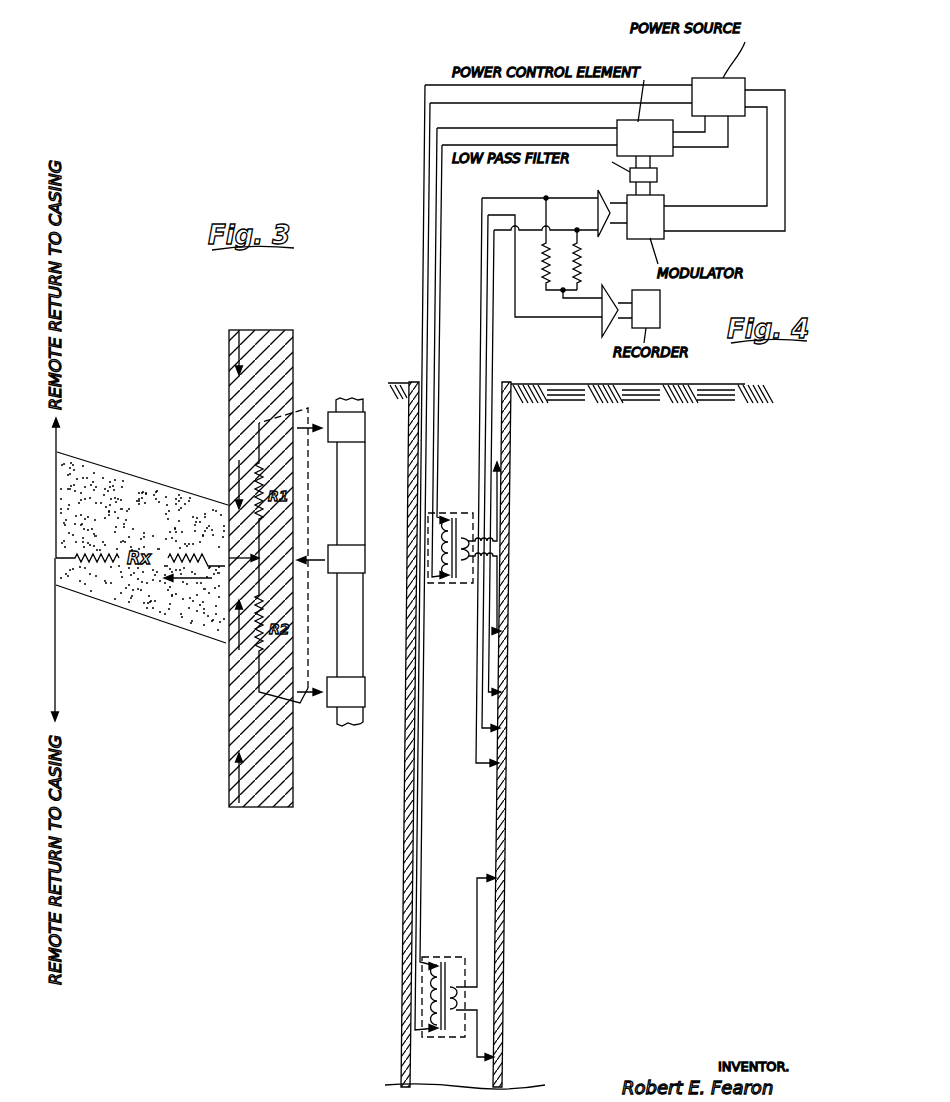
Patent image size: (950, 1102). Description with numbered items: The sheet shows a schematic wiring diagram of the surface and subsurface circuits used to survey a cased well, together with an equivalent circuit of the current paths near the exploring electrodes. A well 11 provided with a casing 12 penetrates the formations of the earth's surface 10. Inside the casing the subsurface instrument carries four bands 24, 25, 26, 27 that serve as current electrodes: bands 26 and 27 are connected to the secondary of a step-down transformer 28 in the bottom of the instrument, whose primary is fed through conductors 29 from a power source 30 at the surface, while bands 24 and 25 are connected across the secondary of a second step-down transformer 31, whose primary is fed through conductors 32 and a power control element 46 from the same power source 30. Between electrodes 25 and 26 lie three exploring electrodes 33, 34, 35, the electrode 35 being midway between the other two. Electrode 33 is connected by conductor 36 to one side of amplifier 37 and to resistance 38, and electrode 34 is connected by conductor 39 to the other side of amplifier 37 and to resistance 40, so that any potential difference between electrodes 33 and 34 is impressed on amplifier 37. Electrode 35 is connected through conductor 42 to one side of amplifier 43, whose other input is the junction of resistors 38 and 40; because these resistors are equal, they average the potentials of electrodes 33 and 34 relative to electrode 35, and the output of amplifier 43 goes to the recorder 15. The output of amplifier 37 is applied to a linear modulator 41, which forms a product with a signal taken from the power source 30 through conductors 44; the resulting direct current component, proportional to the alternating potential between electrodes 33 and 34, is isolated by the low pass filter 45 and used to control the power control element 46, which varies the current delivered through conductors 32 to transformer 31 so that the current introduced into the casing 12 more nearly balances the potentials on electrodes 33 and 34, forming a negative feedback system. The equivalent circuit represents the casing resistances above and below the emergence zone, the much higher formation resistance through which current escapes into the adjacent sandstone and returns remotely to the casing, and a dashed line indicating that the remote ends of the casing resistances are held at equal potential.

In FIG. 3, the earth's surface 10 is at (160, 528).
In FIG. 4, the earth's surface 10 is at (467, 807).
In FIG. 4, the well 11 is at (545, 591).
In FIG. 3, the casing 12 is at (229, 735).
In FIG. 4, the casing 12 is at (510, 513).
In FIG. 4, the recorder 15 is at (646, 309).
In FIG. 4, the band 24 is at (503, 498).
In FIG. 4, the band 25 is at (503, 599).
In FIG. 4, the band 26 is at (495, 927).
In FIG. 4, the band 27 is at (494, 1039).
In FIG. 4, the step-down transformer 28 is at (453, 957).
In FIG. 4, the conductors 29 is at (410, 800).
In FIG. 4, the power source 30 is at (718, 97).
In FIG. 4, the step-down transformer 31 is at (456, 514).
In FIG. 4, the conductors 32 is at (441, 228).
In FIG. 3, the electrode 33 is at (354, 436).
In FIG. 4, the electrode 33 is at (516, 696).
In FIG. 3, the electrode 34 is at (352, 692).
In FIG. 4, the electrode 34 is at (515, 767).
In FIG. 3, the electrode 35 is at (352, 560).
In FIG. 4, the electrode 35 is at (515, 732).
In FIG. 4, the conductor 36 is at (498, 262).
In FIG. 4, the amplifier 37 is at (598, 196).
In FIG. 4, the resistance 38 is at (586, 268).
In FIG. 4, the conductor 39 is at (483, 286).
In FIG. 4, the resistance 40 is at (537, 262).
In FIG. 4, the linear modulator 41 is at (645, 217).
In FIG. 4, the conductor 42 is at (485, 316).
In FIG. 4, the amplifier 43 is at (612, 294).
In FIG. 4, the conductors 44 is at (731, 213).
In FIG. 4, the low pass filter 45 is at (660, 177).
In FIG. 4, the power control element 46 is at (645, 138).